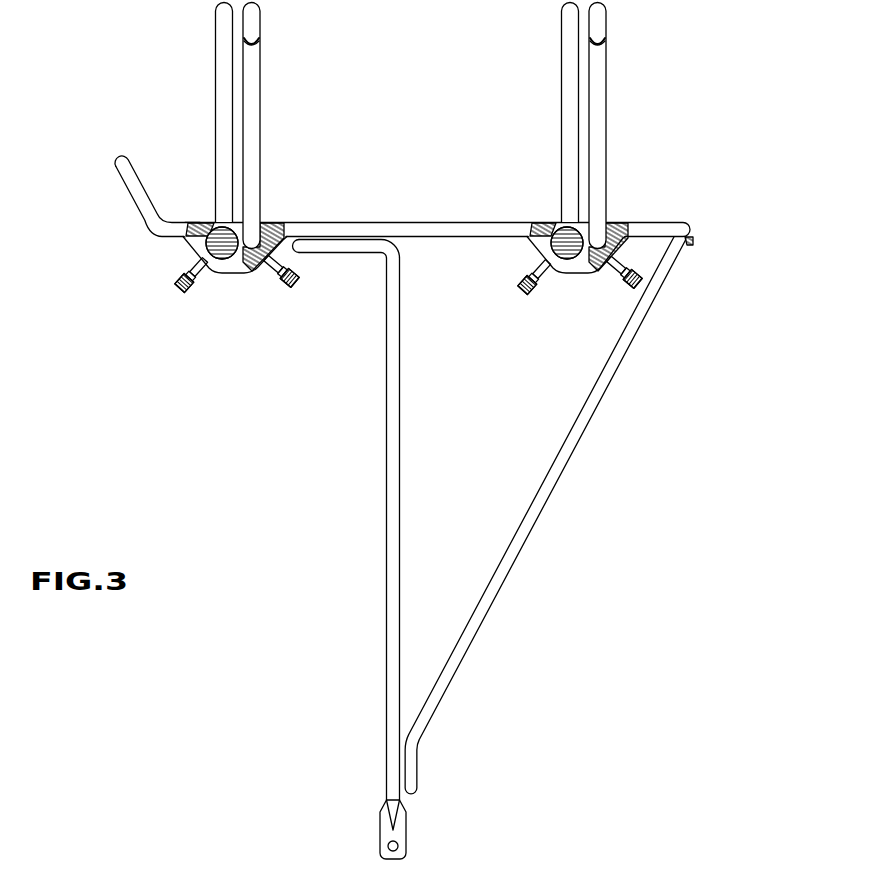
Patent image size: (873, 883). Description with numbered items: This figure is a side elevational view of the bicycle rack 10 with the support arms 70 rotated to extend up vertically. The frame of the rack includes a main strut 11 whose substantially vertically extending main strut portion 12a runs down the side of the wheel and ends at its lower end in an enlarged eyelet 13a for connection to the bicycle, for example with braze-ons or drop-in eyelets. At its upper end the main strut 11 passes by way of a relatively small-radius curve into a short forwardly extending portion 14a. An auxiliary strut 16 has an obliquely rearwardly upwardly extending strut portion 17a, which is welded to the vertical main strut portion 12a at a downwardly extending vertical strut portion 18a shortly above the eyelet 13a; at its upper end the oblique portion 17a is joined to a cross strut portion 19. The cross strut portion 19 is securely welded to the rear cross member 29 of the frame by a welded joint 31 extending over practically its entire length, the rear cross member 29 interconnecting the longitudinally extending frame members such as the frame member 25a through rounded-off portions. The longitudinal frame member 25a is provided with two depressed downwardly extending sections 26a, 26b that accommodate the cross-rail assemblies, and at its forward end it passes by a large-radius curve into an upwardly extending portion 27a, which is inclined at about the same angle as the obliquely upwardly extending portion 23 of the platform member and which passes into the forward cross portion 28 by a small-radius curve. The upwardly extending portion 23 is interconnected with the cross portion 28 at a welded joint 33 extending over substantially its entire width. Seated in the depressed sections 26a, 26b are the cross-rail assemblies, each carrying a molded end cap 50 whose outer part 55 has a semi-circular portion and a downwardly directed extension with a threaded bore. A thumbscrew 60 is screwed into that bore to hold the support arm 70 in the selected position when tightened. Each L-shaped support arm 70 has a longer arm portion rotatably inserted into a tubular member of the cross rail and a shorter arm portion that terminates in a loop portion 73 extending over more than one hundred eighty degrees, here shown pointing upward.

The bicycle rack 10 is at (413, 478).
The main strut 11 is at (402, 558).
The vertically extending main strut portion 12a is at (386, 568).
The enlarged eyelet 13a is at (406, 833).
The forwardly extending portion 14a is at (340, 253).
The auxiliary strut 16 is at (598, 515).
The obliquely rearwardly upwardly extending strut portion 17a is at (523, 555).
The downwardly extending vertical strut portion 18a is at (418, 780).
The cross strut portion 19 is at (693, 248).
The obliquely upwardly extending portion 23 is at (115, 191).
The longitudinally extending frame member 25a is at (484, 238).
The depressed downwardly extending section 26a is at (233, 274).
The depressed downwardly extending section 26b is at (572, 275).
The upwardly extending portion 27a is at (132, 215).
The cross portion 28 is at (118, 160).
The rear cross member 29 is at (684, 222).
The welded joint 31 is at (692, 240).
The welded joint 33 is at (113, 164).
The molded end cap 50 is at (215, 230).
The outer part 55 is at (252, 272).
The thumbscrew 60 is at (186, 292).
The support arm 70 is at (228, 120).
The loop portion 73 is at (256, 26).